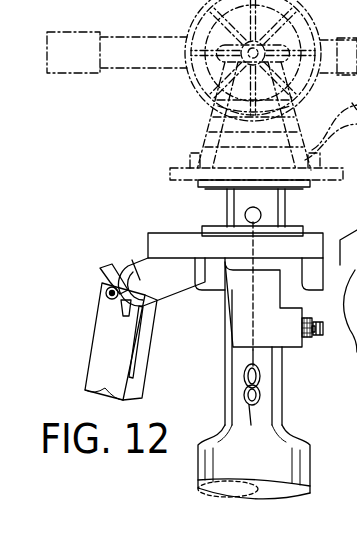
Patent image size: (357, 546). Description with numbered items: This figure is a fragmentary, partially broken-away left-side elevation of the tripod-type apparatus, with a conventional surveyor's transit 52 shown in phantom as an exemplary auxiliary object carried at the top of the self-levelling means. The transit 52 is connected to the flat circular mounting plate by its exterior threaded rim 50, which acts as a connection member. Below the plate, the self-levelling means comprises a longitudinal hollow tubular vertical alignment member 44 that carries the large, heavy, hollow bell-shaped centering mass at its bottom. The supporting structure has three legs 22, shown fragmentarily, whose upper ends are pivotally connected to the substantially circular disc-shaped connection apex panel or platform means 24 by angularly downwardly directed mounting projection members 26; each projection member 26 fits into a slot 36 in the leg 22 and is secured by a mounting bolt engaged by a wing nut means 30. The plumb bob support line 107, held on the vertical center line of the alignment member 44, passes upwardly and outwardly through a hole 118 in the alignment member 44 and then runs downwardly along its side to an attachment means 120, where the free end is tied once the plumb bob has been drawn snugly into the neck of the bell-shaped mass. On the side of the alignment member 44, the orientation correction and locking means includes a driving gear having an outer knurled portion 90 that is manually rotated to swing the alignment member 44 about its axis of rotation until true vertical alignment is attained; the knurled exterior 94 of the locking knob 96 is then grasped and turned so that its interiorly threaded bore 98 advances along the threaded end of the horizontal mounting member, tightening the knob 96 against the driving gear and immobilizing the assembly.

The surveyor's transit 52 is at (170, 94).
The exterior threaded rim 50 is at (310, 182).
The hole 118 is at (258, 220).
The connection apex panel or platform means 24 is at (145, 233).
The mounting projection members 26 is at (150, 268).
The wing nut means 30 is at (100, 268).
The legs 22 is at (100, 335).
The slot 36 is at (142, 365).
The longitudinal vertical alignment member 44 is at (227, 310).
The plumb bob support line 107 is at (248, 353).
The attachment means 120 is at (245, 389).
The locking knob 96 is at (321, 324).
The interiorly threaded bore 98 is at (356, 358).
The knurled exterior 94 is at (312, 338).
The outer knurled portion 90 is at (306, 338).